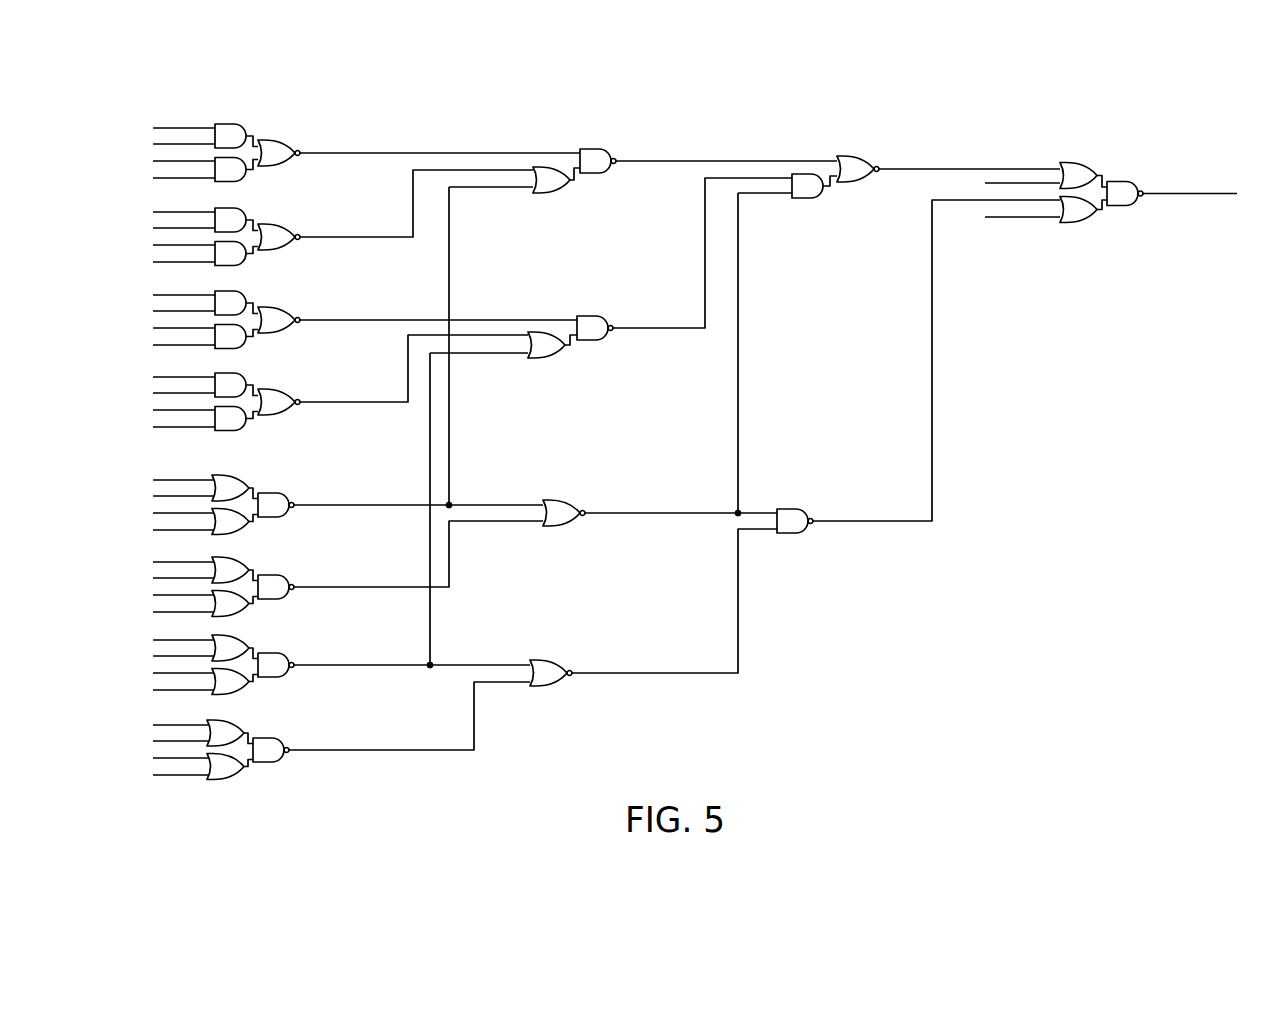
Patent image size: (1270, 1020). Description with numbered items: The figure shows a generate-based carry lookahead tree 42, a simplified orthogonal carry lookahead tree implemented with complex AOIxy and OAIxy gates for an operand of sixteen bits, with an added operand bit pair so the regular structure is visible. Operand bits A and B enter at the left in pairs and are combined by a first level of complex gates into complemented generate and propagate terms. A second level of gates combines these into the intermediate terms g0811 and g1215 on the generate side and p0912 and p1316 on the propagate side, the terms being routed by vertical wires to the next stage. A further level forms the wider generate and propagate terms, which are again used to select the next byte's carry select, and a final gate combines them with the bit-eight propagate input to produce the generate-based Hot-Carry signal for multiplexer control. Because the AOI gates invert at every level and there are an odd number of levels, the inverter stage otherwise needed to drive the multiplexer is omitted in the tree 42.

The generate-based carry lookahead tree 42 is at (695, 424).
The generate signal bits 8-11 g0811 is at (643, 324).
The generate signal bits 12-15 g1215 is at (611, 421).
The propagate signal bits 9-12 p0912 is at (660, 510).
The propagate signal bits 13-16 p1316 is at (653, 607).